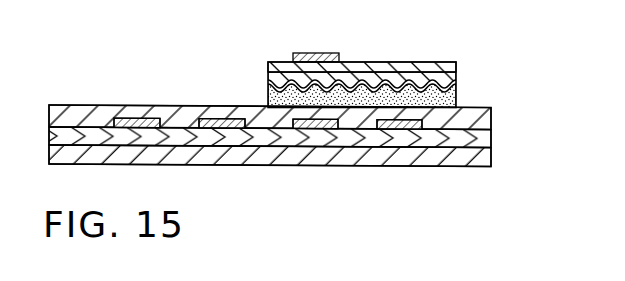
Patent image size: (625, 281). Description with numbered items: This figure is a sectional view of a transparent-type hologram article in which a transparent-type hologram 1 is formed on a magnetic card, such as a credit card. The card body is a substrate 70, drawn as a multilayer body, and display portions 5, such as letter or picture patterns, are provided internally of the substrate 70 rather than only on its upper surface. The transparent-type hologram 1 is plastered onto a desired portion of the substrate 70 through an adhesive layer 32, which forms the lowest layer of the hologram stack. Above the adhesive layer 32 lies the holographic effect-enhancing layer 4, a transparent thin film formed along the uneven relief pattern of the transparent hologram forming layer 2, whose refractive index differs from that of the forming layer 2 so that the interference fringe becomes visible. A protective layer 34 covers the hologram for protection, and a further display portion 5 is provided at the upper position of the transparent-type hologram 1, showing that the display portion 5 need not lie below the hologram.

The transparent-type hologram 1 is at (370, 64).
The transparent hologram forming layer 2 is at (455, 76).
The holographic effect-enhancing layer 4 is at (455, 87).
The display portion 5 is at (138, 118).
The adhesive layer 32 is at (455, 95).
The protective layer 34 is at (407, 65).
The substrate 70 is at (83, 106).